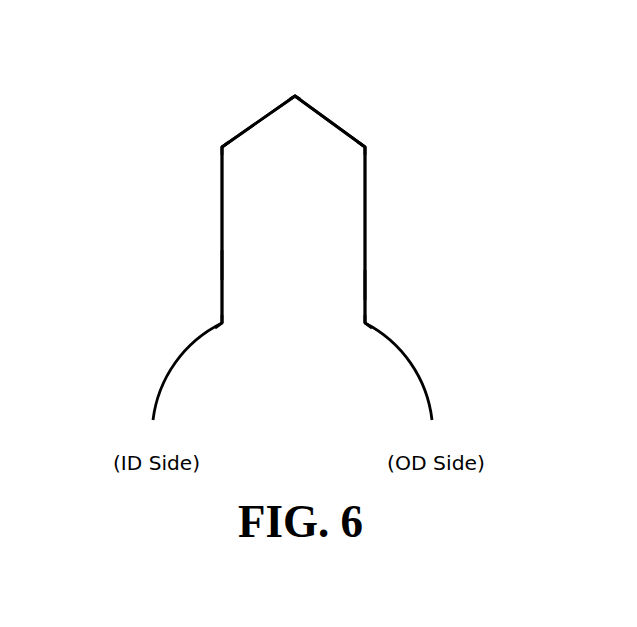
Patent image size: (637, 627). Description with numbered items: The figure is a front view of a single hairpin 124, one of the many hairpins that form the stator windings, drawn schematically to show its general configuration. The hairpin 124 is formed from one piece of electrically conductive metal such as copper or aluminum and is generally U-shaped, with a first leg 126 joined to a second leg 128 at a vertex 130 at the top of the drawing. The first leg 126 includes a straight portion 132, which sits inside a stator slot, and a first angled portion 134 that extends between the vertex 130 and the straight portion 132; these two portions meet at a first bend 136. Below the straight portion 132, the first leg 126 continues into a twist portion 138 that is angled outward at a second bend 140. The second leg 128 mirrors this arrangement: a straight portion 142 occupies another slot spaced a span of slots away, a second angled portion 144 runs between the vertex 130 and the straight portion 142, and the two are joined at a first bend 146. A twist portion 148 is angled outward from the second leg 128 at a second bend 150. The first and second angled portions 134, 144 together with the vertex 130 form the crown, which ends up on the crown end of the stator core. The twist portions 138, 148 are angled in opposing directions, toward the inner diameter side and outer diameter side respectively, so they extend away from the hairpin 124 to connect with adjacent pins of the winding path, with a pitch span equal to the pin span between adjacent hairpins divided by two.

The hairpin 124 is at (211, 53).
The first leg 126 is at (363, 287).
The second leg 128 is at (218, 287).
The vertex 130 is at (295, 94).
The straight portion 132 is at (367, 210).
The first angled portion 134 is at (333, 118).
The first bend 136 is at (362, 150).
The twist portion 138 is at (407, 361).
The second bend 140 is at (363, 325).
The straight portion 142 is at (223, 265).
The second angled portion 144 is at (253, 125).
The first bend 146 is at (225, 150).
The twist portion 148 is at (181, 362).
The second bend 150 is at (224, 325).